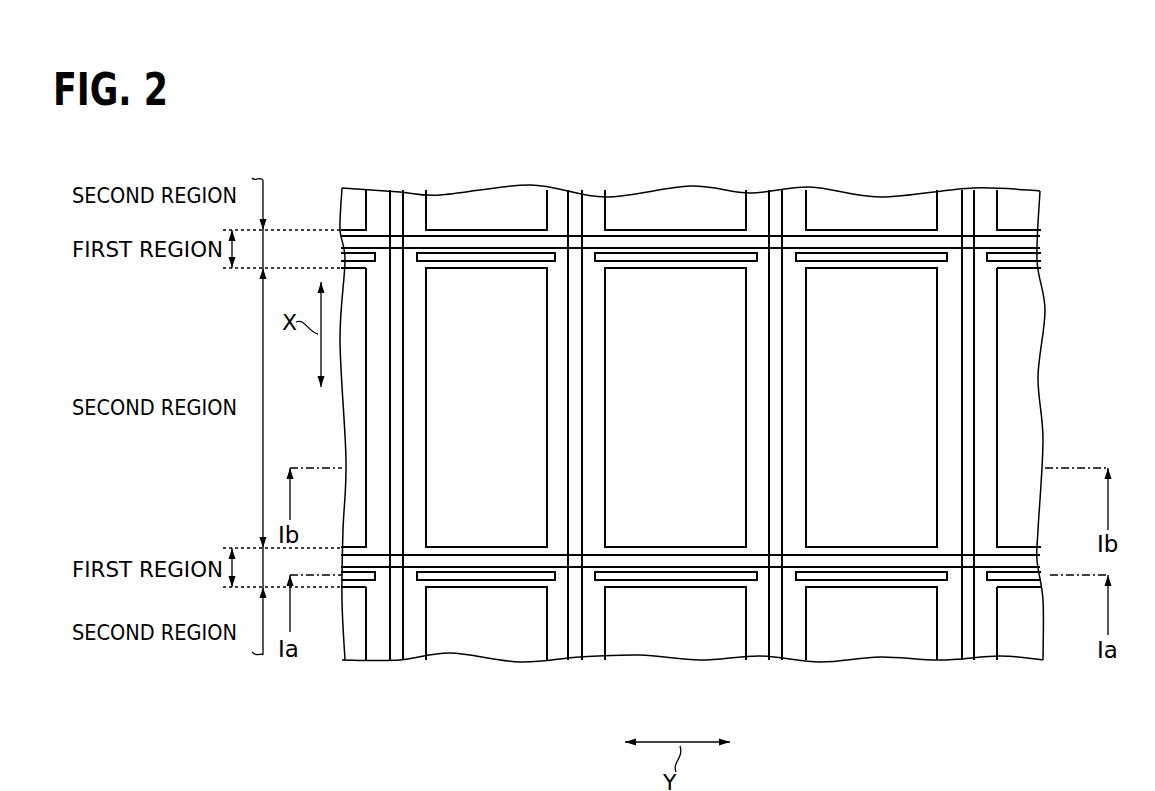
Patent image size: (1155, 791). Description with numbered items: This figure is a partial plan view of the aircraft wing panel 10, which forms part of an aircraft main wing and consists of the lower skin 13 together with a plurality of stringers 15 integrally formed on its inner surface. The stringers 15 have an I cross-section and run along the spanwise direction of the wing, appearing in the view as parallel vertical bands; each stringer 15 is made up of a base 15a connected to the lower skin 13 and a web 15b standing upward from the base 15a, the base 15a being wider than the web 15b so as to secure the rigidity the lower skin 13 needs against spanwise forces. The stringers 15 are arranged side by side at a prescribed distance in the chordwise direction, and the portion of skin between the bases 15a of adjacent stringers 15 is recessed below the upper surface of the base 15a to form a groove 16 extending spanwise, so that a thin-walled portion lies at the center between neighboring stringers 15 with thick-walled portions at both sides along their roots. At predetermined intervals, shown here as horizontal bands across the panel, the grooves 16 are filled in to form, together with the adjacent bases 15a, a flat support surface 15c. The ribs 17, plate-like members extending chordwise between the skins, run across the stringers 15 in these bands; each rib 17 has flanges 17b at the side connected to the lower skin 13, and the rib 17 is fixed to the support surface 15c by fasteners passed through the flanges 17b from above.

The aircraft wing panel 10 is at (694, 165).
The lower skin 13 is at (1038, 390).
The stringer 15 is at (403, 620).
The base 15a is at (545, 622).
The web 15b is at (592, 628).
The support surface 15c is at (587, 582).
The groove 16 is at (500, 402).
The rib 17 is at (1020, 236).
The flange 17b is at (483, 262).